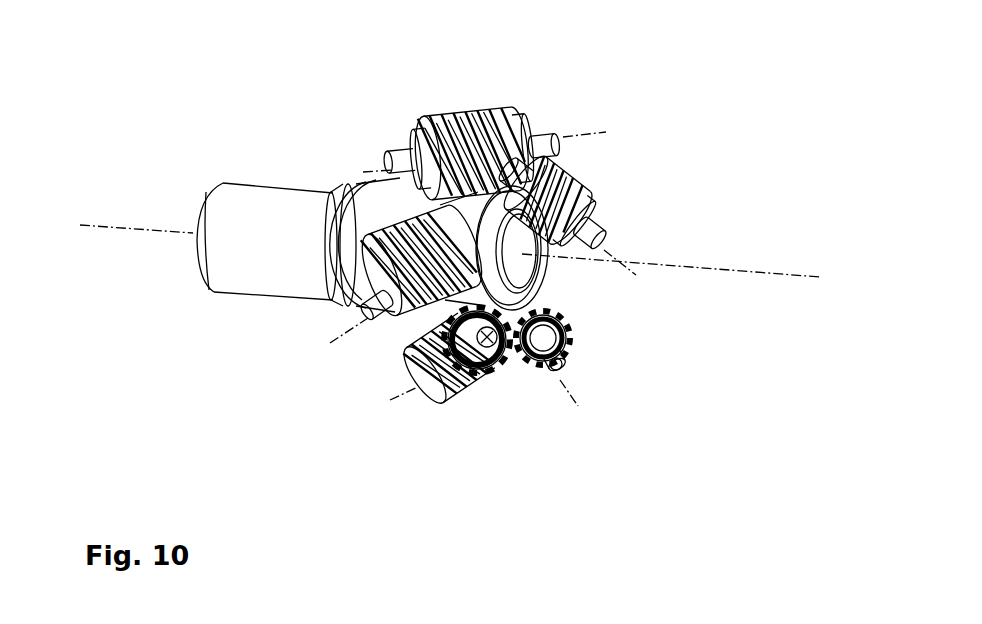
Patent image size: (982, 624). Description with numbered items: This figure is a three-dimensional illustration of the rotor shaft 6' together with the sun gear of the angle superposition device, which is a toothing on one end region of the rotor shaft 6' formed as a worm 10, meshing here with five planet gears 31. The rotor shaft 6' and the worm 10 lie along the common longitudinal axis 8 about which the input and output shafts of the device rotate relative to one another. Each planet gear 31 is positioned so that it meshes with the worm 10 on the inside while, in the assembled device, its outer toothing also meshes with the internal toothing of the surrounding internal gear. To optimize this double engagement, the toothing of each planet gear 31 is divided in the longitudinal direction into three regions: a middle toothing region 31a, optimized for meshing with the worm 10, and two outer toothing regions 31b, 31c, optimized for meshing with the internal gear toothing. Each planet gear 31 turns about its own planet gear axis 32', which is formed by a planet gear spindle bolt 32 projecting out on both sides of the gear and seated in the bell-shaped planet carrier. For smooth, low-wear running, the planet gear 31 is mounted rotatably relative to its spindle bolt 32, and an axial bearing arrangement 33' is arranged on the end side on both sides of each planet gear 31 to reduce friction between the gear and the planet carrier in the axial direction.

The longitudinal axis 8 is at (117, 227).
The rotor shaft 6' is at (245, 283).
The worm 10 is at (393, 198).
The planet gear 31 is at (505, 255).
The middle toothing region 31a is at (473, 153).
The outer toothing region 31b is at (413, 122).
The outer toothing region 31c is at (524, 147).
The planet gear spindle bolt 32 is at (483, 325).
The planet gear axis 32' is at (490, 268).
The axial bearing arrangement 33' is at (478, 290).